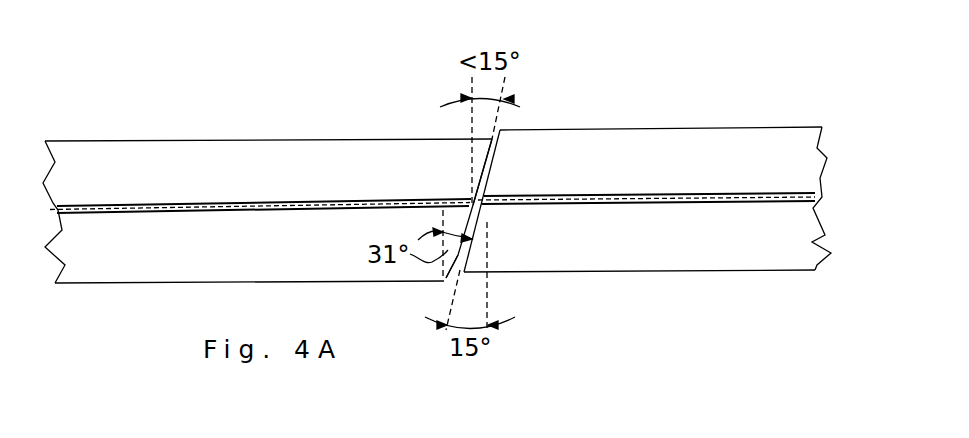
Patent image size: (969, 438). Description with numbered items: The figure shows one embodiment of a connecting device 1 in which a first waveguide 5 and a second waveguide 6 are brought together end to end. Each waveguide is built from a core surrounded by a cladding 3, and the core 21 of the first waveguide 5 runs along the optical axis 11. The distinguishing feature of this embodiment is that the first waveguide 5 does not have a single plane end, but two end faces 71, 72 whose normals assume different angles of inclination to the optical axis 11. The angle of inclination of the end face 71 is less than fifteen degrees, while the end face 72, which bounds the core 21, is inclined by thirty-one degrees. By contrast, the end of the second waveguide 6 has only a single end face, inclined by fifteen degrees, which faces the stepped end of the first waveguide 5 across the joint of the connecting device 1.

The connecting device 1 is at (562, 41).
The cladding 3 is at (652, 233).
The first waveguide 5 is at (162, 139).
The second waveguide 6 is at (704, 128).
The optical axis 11 is at (312, 206).
The core 21 is at (98, 214).
The end face 71 is at (476, 168).
The end face 72 is at (447, 268).